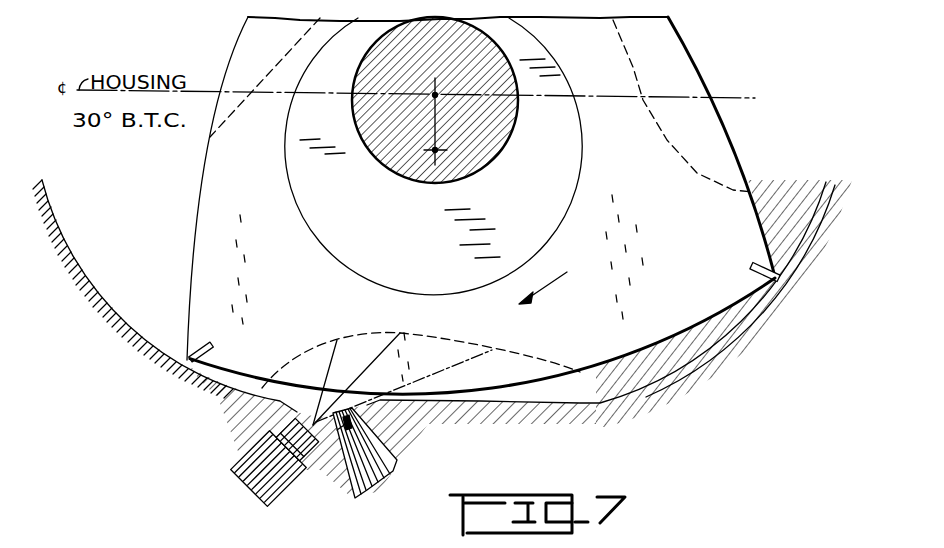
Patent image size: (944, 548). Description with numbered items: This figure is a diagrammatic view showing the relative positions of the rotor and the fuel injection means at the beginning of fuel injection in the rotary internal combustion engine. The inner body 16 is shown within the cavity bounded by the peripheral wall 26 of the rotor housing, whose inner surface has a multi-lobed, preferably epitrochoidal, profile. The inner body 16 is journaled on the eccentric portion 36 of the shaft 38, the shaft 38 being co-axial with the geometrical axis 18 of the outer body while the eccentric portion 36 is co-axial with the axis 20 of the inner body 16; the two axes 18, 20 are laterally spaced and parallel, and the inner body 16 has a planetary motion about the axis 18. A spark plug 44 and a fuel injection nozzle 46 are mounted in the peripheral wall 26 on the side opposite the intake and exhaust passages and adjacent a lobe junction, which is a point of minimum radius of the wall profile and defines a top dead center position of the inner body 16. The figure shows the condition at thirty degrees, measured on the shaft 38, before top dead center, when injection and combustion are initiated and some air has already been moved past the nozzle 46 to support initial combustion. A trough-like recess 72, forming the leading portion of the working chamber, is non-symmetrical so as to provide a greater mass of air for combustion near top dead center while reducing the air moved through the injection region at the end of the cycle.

The inner body 16 is at (711, 88).
The axis of the outer body 18 is at (437, 93).
The axis of the inner body 20 is at (433, 149).
The peripheral wall 26 is at (626, 392).
The eccentric portion 36 is at (423, 244).
The shaft 38 is at (505, 142).
The spark plug 44 is at (377, 470).
The fuel injection nozzle 46 is at (257, 480).
The trough-like recesses 72 is at (246, 101).